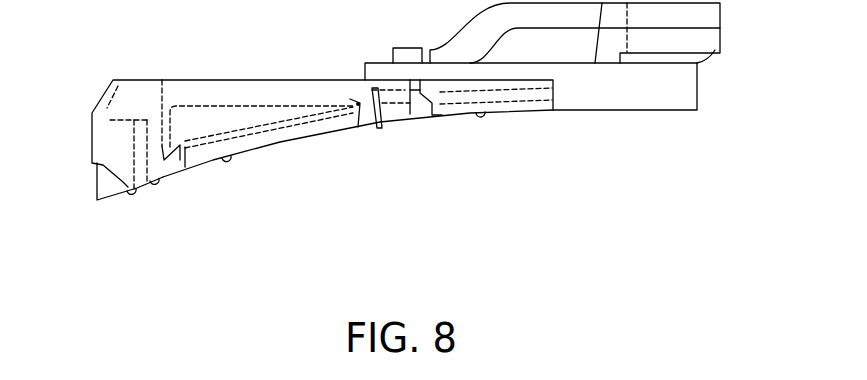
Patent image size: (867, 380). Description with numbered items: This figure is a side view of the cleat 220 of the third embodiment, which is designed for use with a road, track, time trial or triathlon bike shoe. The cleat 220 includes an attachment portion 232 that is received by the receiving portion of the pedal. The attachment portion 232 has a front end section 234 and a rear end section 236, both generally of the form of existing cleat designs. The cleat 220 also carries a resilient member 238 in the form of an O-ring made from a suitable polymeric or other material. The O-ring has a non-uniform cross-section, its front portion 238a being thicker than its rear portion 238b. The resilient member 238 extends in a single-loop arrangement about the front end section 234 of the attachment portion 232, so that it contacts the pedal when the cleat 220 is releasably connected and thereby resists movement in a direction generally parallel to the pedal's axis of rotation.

The cleat 220 is at (278, 145).
The attachment portion 232 is at (413, 136).
The front end section 234 is at (713, 53).
The rear end section 236 is at (118, 193).
The resilient member 238 is at (466, 175).
The front portion 238a is at (555, 111).
The rear portion 238b is at (380, 128).